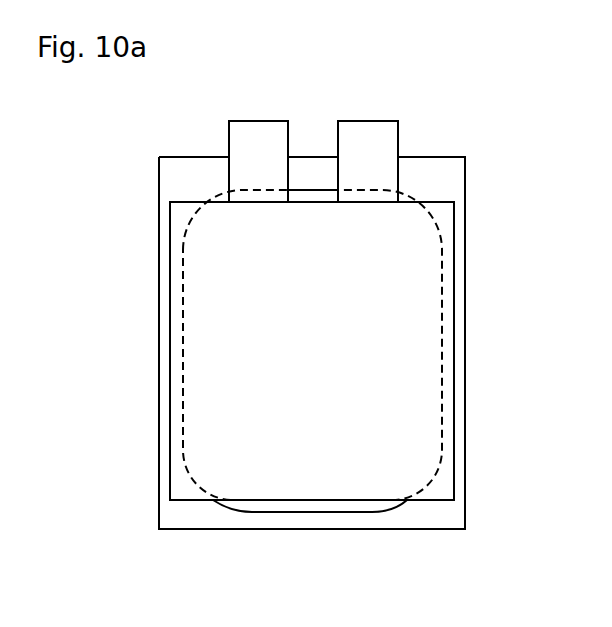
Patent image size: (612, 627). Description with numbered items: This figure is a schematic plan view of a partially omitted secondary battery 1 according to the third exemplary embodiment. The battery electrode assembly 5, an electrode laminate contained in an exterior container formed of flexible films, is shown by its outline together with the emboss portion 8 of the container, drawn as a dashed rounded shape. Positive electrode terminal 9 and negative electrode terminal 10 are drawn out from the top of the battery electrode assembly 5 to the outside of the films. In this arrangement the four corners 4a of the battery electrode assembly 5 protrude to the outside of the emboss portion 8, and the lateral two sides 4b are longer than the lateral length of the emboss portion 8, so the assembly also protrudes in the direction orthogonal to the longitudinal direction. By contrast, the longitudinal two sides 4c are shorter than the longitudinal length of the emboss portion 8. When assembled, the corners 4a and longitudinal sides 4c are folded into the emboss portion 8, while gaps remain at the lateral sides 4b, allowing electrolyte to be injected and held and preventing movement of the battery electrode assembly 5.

The secondary battery 1 is at (306, 310).
The four corners 4a is at (180, 222).
The lateral two sides 4b is at (302, 202).
The longitudinal two sides 4c is at (170, 373).
The battery electrode assembly 5 is at (452, 415).
The emboss portion 8 is at (437, 295).
The positive electrode terminal 9 is at (238, 128).
The negative electrode terminal 10 is at (376, 135).